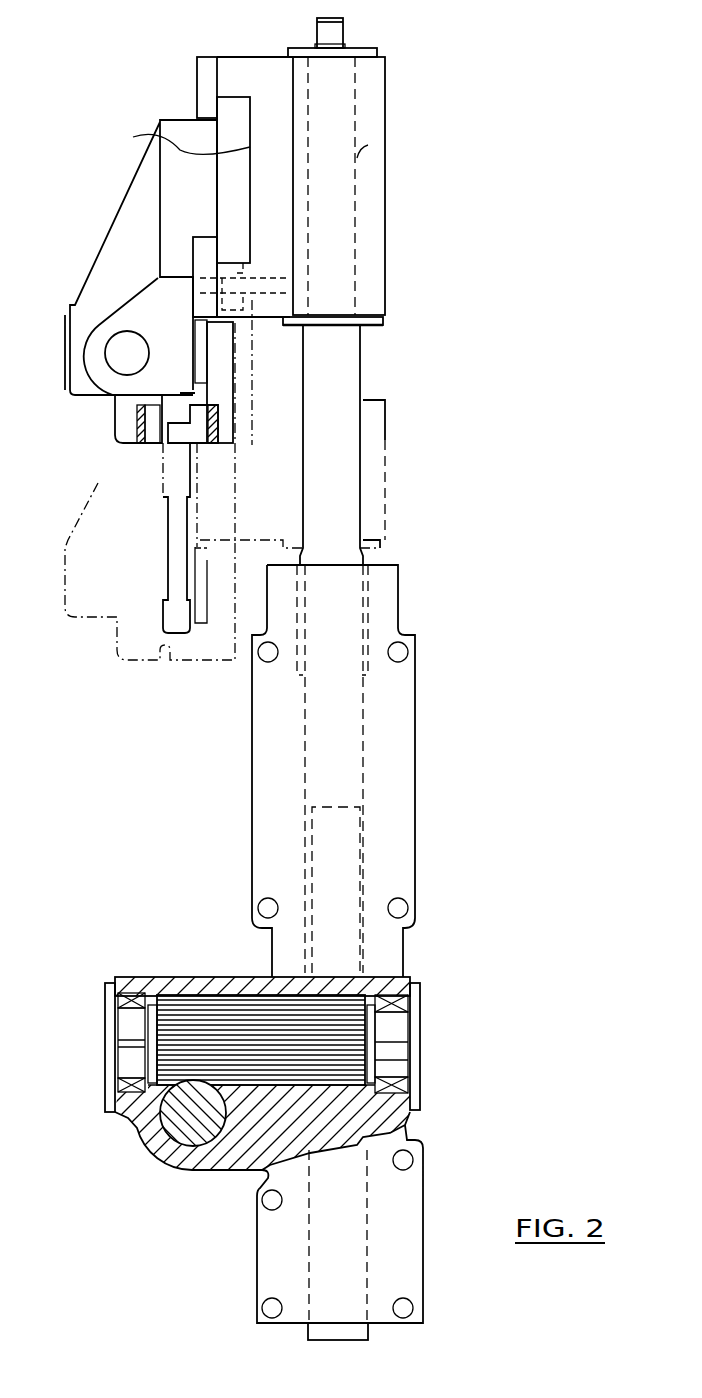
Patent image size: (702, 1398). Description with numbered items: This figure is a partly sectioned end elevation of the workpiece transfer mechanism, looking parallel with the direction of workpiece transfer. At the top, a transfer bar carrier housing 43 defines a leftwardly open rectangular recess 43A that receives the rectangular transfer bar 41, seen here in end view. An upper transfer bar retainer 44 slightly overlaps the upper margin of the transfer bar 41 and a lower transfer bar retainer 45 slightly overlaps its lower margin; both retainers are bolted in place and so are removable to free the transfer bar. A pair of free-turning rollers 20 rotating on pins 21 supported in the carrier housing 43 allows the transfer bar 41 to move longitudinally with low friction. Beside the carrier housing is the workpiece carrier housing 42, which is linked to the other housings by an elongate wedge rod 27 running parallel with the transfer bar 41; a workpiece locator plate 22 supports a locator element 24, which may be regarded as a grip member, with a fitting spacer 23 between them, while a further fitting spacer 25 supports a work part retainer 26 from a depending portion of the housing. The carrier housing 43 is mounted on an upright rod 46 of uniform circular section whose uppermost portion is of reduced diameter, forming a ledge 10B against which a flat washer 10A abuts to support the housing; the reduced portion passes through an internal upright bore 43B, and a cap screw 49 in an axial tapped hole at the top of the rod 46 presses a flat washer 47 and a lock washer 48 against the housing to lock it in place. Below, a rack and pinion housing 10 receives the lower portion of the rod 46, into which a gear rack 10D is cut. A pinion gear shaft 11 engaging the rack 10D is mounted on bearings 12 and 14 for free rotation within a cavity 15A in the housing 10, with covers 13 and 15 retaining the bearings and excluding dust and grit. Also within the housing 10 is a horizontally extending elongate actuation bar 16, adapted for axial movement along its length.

The rack and pinion housing 10 is at (410, 747).
The flat washer 10A is at (385, 322).
The ledge 10B is at (363, 317).
The gear rack 10D is at (348, 877).
The pinion gear shaft 11 is at (398, 1031).
The bearing 12 is at (410, 1000).
The cover 13 is at (418, 1088).
The bearing 14 is at (132, 995).
The cover 15 is at (105, 1000).
The cavity 15A is at (238, 1000).
The actuation bar 16 is at (182, 1125).
The free-turning rollers 20 is at (232, 265).
The pins 21 is at (288, 293).
The workpiece locator plate 22 is at (213, 445).
The fitting spacer 23 is at (225, 445).
The locator element 24 is at (198, 445).
The fitting spacer 25 is at (137, 445).
The work part retainer 26 is at (153, 445).
The wedge rod 27 is at (110, 345).
The transfer bar 41 is at (235, 103).
The workpiece carrier housing 42 is at (175, 118).
The transfer bar carrier housing 43 is at (375, 187).
The recess 43A is at (171, 140).
The internal upright bore 43B is at (368, 145).
The upper transfer bar retainer 44 is at (205, 57).
The lower transfer bar retainer 45 is at (222, 232).
The rod 46 is at (362, 375).
The flat washer 47 is at (354, 56).
The lock washer 48 is at (346, 46).
The cap screw 49 is at (343, 28).